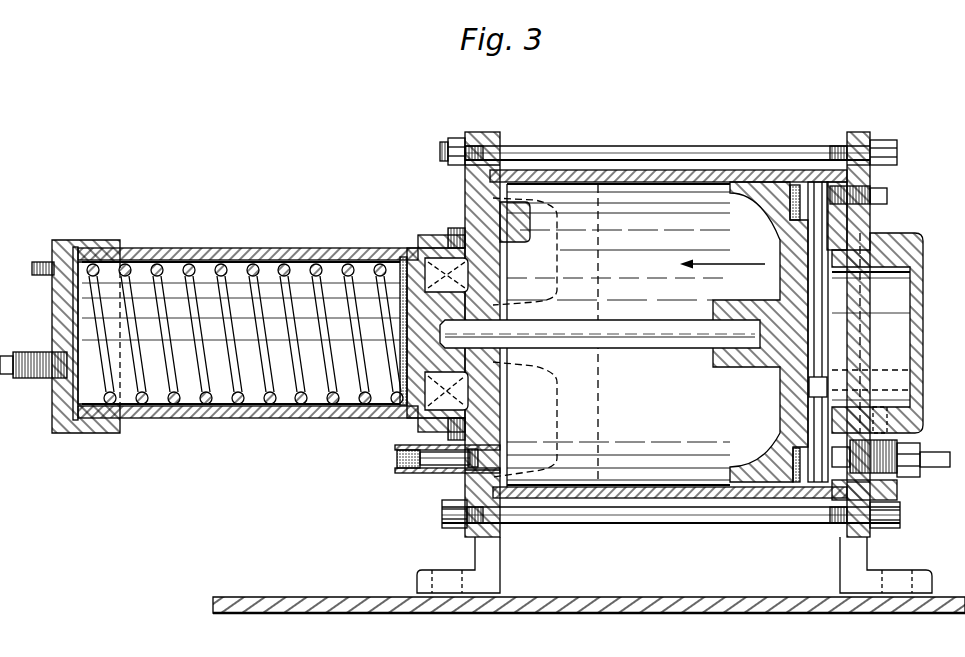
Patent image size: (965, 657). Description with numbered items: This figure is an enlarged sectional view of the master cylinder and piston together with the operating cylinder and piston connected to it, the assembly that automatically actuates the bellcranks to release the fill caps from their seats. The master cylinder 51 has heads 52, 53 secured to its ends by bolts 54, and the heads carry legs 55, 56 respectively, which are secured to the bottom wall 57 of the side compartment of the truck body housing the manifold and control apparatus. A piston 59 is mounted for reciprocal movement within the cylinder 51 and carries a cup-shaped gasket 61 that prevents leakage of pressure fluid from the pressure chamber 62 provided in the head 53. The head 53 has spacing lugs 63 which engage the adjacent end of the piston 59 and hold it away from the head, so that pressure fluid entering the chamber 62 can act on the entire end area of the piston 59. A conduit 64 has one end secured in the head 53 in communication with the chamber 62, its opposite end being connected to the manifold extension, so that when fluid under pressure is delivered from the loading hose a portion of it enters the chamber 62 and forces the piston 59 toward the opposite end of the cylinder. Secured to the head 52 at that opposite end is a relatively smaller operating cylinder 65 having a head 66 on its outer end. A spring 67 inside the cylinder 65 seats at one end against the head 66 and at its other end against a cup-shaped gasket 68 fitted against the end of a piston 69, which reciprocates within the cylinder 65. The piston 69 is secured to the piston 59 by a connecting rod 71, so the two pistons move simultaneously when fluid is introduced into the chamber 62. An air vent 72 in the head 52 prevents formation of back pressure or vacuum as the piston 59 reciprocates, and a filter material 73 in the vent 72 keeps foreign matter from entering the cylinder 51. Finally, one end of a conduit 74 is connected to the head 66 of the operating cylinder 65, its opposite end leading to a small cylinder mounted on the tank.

The master cylinder 51 is at (679, 163).
The cylinder head 52 is at (468, 193).
The cylinder head 53 is at (872, 213).
The bolts 54 is at (748, 153).
The leg 55 is at (501, 563).
The leg 56 is at (843, 555).
The bottom wall 57 is at (630, 597).
The piston 59 is at (786, 410).
The cup-shaped gasket 61 is at (792, 207).
The pressure chamber 62 is at (900, 331).
The spacing lugs 63 is at (820, 378).
The conduit 64 is at (938, 456).
The operating cylinder 65 is at (221, 249).
The head 66 is at (54, 300).
The spring 67 is at (243, 392).
The cup-shaped gasket 68 is at (404, 375).
The piston 69 is at (478, 400).
The connecting rod 71 is at (622, 340).
The air vent 72 is at (435, 463).
The filter material 73 is at (397, 460).
The conduit 74 is at (10, 378).